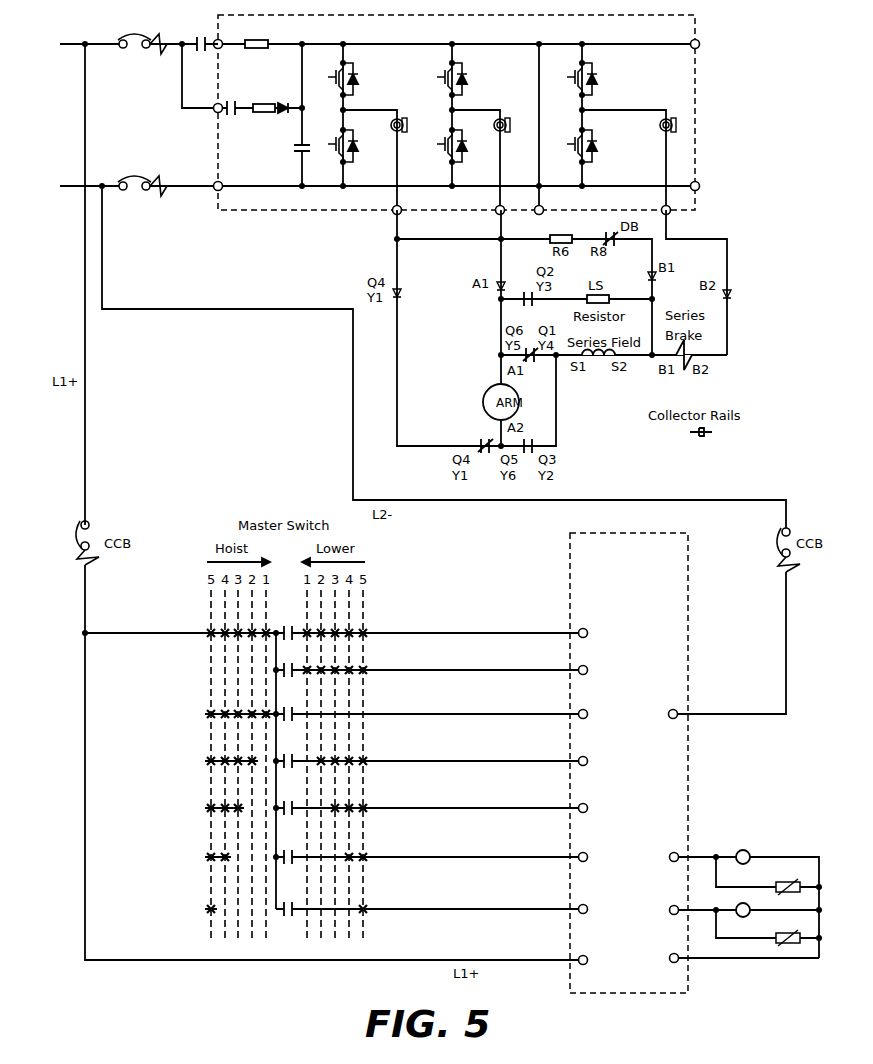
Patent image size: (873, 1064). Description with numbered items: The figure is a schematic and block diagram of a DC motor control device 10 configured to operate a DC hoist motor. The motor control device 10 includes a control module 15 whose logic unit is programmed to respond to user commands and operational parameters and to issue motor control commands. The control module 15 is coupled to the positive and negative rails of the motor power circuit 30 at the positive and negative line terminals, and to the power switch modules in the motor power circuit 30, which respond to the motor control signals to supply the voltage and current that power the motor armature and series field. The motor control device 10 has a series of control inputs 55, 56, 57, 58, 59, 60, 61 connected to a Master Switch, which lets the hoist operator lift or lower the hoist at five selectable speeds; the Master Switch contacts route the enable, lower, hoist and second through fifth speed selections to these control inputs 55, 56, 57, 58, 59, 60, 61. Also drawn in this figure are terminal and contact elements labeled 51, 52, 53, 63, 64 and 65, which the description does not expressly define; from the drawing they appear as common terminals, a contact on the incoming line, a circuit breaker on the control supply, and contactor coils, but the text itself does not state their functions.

The motor power circuit 30 is at (745, 56).
The DC motor control device 10 is at (668, 598).
The control module 15 is at (645, 836).
The L1+ common terminal 51 is at (335, 512).
The COM+ terminal 52 is at (745, 968).
The main contactor contact M 53 is at (211, 51).
The control input 55 is at (336, 642).
The control input 56 is at (432, 679).
The control input 57 is at (396, 723).
The control input 58 is at (396, 770).
The control input 59 is at (396, 817).
The control input 60 is at (396, 866).
The control input 61 is at (396, 918).
The control circuit breaker CCB 63 is at (739, 621).
The main contactor coil M 64 is at (746, 895).
The dynamic brake contactor coil DB 65 is at (746, 918).